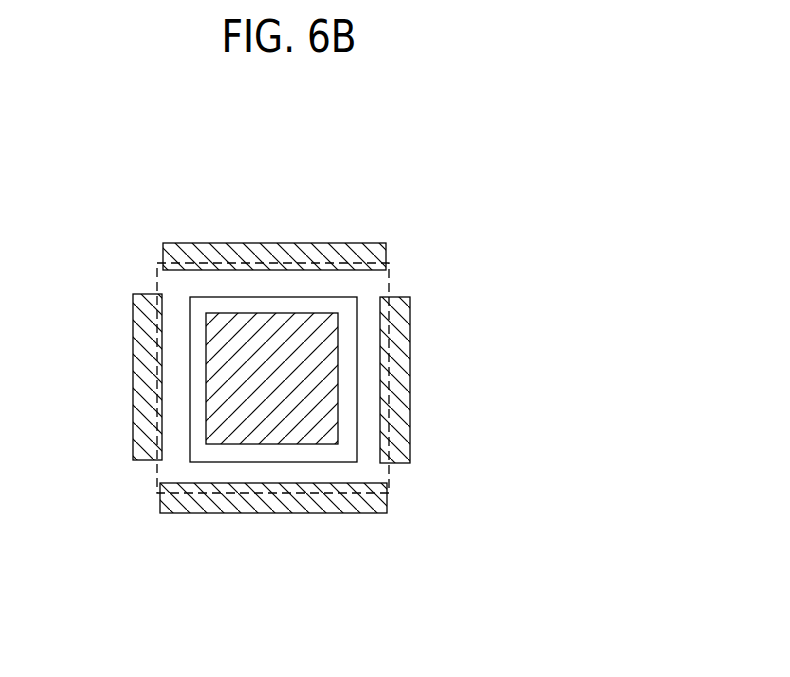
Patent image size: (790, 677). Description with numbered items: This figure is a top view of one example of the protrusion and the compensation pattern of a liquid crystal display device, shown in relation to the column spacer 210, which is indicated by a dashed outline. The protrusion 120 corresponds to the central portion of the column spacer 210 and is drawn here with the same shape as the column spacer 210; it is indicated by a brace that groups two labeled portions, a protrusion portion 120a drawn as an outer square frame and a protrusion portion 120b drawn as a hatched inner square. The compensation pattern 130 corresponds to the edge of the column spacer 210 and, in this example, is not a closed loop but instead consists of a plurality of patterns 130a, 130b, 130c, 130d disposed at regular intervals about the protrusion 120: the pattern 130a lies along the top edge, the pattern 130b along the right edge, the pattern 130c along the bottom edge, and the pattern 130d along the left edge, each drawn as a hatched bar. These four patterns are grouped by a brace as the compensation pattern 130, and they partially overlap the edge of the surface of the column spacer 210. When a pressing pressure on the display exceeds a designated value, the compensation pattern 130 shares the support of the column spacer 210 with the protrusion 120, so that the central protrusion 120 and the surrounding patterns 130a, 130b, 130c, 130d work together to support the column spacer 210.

The protrusion 120 is at (193, 311).
The protrusion portion 120a is at (207, 297).
The protrusion portion 120b is at (208, 350).
The compensation pattern 130 is at (376, 426).
The pattern 130a is at (387, 262).
The pattern 130b is at (410, 359).
The pattern 130c is at (372, 504).
The pattern 130d is at (143, 462).
The column spacer 210 is at (293, 262).